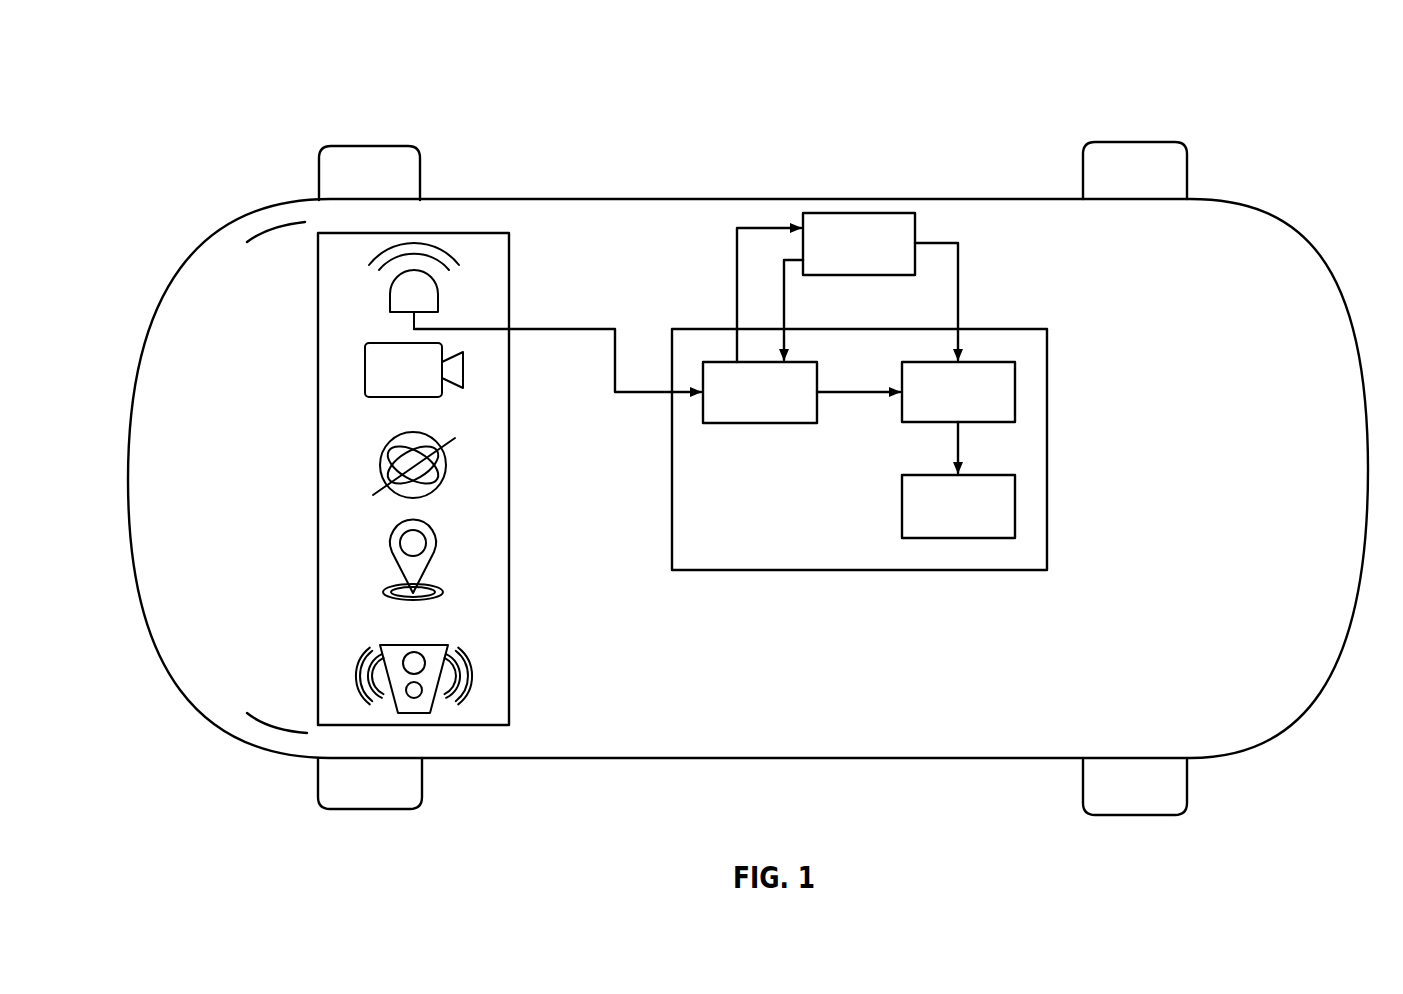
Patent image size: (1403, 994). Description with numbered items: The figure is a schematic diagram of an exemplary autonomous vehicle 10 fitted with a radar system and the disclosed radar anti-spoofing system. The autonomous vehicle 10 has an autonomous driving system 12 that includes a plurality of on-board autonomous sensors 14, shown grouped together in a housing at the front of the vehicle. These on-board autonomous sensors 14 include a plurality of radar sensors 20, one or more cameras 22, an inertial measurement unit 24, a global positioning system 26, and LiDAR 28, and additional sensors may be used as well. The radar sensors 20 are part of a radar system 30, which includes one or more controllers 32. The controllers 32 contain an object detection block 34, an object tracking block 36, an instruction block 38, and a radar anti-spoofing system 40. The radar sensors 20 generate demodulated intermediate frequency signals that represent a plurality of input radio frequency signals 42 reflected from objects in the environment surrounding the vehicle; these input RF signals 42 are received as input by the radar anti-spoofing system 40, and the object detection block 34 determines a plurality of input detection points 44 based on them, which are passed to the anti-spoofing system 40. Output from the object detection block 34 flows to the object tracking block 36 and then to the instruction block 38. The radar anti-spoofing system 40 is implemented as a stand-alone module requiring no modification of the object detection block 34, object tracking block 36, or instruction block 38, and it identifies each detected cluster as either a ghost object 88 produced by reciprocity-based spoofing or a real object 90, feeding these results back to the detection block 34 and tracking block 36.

The autonomous vehicle 10 is at (1236, 94).
The autonomous driving system 12 is at (546, 256).
The on-board autonomous sensors 14 is at (318, 470).
The radar sensors 20 is at (437, 245).
The cameras 22 is at (388, 343).
The inertial measurement unit 24 is at (397, 437).
The global positioning system 26 is at (393, 531).
The LiDAR 28 is at (395, 645).
The radar system 30 is at (1045, 311).
The controllers 32 is at (1048, 448).
The object detection block 34 is at (773, 409).
The object tracking block 36 is at (971, 408).
The instruction block 38 is at (971, 524).
The radar anti-spoofing system 40 is at (873, 260).
The input radio frequency signals 42 is at (548, 328).
The input detection points 44 is at (737, 258).
The ghost object 88 is at (785, 313).
The real object 90 is at (958, 265).